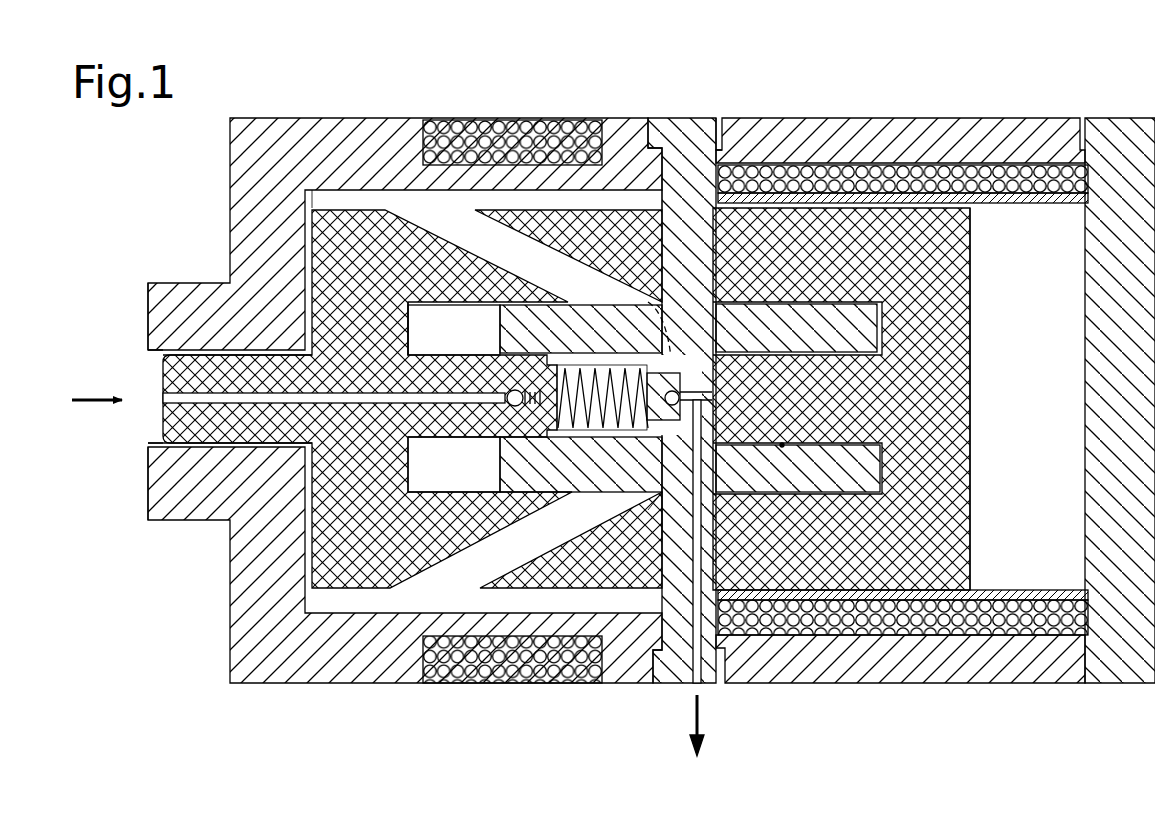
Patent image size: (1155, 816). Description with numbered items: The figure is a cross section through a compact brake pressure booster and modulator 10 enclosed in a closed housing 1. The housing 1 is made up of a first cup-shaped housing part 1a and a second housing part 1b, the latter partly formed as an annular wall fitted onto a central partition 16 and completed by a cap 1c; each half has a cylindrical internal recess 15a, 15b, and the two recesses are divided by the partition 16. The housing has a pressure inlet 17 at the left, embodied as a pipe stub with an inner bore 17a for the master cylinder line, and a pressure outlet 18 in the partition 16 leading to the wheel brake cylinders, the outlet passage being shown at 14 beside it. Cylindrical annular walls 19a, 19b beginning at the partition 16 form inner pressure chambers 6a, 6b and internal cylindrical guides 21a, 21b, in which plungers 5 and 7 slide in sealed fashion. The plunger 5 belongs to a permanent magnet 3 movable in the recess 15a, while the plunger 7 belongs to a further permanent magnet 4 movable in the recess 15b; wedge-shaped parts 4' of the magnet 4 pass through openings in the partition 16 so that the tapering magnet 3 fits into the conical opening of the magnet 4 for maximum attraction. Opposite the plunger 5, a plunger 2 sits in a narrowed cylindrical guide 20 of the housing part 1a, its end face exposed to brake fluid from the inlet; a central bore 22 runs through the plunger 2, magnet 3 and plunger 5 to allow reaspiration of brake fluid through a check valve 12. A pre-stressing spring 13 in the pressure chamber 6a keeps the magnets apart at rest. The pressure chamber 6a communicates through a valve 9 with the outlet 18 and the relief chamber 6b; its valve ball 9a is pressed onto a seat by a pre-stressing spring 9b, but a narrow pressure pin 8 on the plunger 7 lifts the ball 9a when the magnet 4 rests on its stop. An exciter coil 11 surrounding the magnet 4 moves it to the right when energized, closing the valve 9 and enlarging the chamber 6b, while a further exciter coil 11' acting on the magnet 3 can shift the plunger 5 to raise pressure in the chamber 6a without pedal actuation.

The housing 1 is at (405, 364).
The first cup-shaped housing part 1a is at (352, 126).
The second housing part 1b is at (1024, 118).
The cap 1c is at (1126, 118).
The plunger 2 is at (165, 383).
The permanent magnet 3 is at (312, 578).
The permanent magnet 4 is at (989, 316).
The wedge-shaped parts of the permanent magnet 4' is at (558, 328).
The plunger 5 is at (453, 398).
The pressure chamber 6a is at (650, 421).
The relief chamber 6b is at (751, 446).
The plunger 7 is at (952, 440).
The pressure rod or pin 8 is at (642, 336).
The valve 9 is at (598, 330).
The valve ball 9a is at (663, 494).
The pre-stressing spring 9b is at (660, 495).
The brake pressure booster and modulator 10 is at (658, 112).
The exciter coil 11 is at (903, 339).
The further exciter coil 11' is at (512, 364).
The check valve 12 is at (481, 440).
The pre-stressing spring 13 is at (571, 432).
The outlet passage 14 is at (676, 684).
The housing recess 15a is at (330, 192).
The housing recess 15b is at (1062, 200).
The central partition 16 is at (717, 140).
The pressure inlet 17 is at (144, 292).
The inner bore 17a is at (156, 352).
The pressure outlet 18 is at (714, 690).
The cylindrical annular wall 19a is at (592, 346).
The cylindrical annular wall 19b is at (864, 316).
The narrowed cylindrical guide 20 is at (152, 444).
The internal cylindrical guide 21a is at (624, 432).
The internal cylindrical guide 21b is at (793, 446).
The bore 22 is at (192, 401).